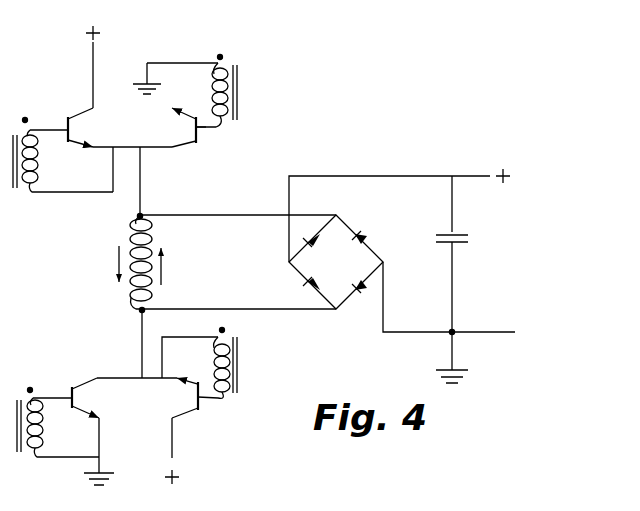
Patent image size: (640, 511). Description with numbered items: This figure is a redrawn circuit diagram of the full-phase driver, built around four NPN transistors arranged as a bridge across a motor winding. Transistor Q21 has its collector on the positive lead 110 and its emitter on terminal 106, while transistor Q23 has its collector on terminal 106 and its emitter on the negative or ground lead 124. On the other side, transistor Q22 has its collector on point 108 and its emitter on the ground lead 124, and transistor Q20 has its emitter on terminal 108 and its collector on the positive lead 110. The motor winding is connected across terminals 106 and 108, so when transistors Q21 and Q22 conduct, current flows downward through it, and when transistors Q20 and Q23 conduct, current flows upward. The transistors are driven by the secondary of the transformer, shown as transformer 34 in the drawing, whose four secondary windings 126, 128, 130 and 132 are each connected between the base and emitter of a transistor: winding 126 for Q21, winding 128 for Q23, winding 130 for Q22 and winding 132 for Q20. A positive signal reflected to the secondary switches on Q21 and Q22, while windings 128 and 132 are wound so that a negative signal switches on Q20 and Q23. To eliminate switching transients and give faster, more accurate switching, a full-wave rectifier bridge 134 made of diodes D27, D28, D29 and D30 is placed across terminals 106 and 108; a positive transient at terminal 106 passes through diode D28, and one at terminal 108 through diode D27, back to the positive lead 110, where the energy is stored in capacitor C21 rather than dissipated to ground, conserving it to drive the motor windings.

The positive lead 110 is at (92, 52).
The negative or ground lead 124 is at (138, 64).
The NPN transistor Q21 is at (68, 117).
The NPN transistor Q23 is at (197, 138).
The NPN transistor Q22 is at (70, 386).
The NPN transistor Q20 is at (200, 405).
The secondary winding 126 is at (38, 168).
The secondary winding 128 is at (212, 98).
The secondary winding 130 is at (42, 432).
The secondary winding 132 is at (212, 361).
The transformer 34 is at (245, 58).
The terminal 106 is at (141, 216).
The terminal 108 is at (141, 311).
The full-wave rectifier bridge 134 is at (352, 269).
The diode D27 is at (303, 288).
The diode D28 is at (300, 244).
The diode D29 is at (365, 294).
The diode D30 is at (362, 232).
The capacitor C21 is at (456, 232).